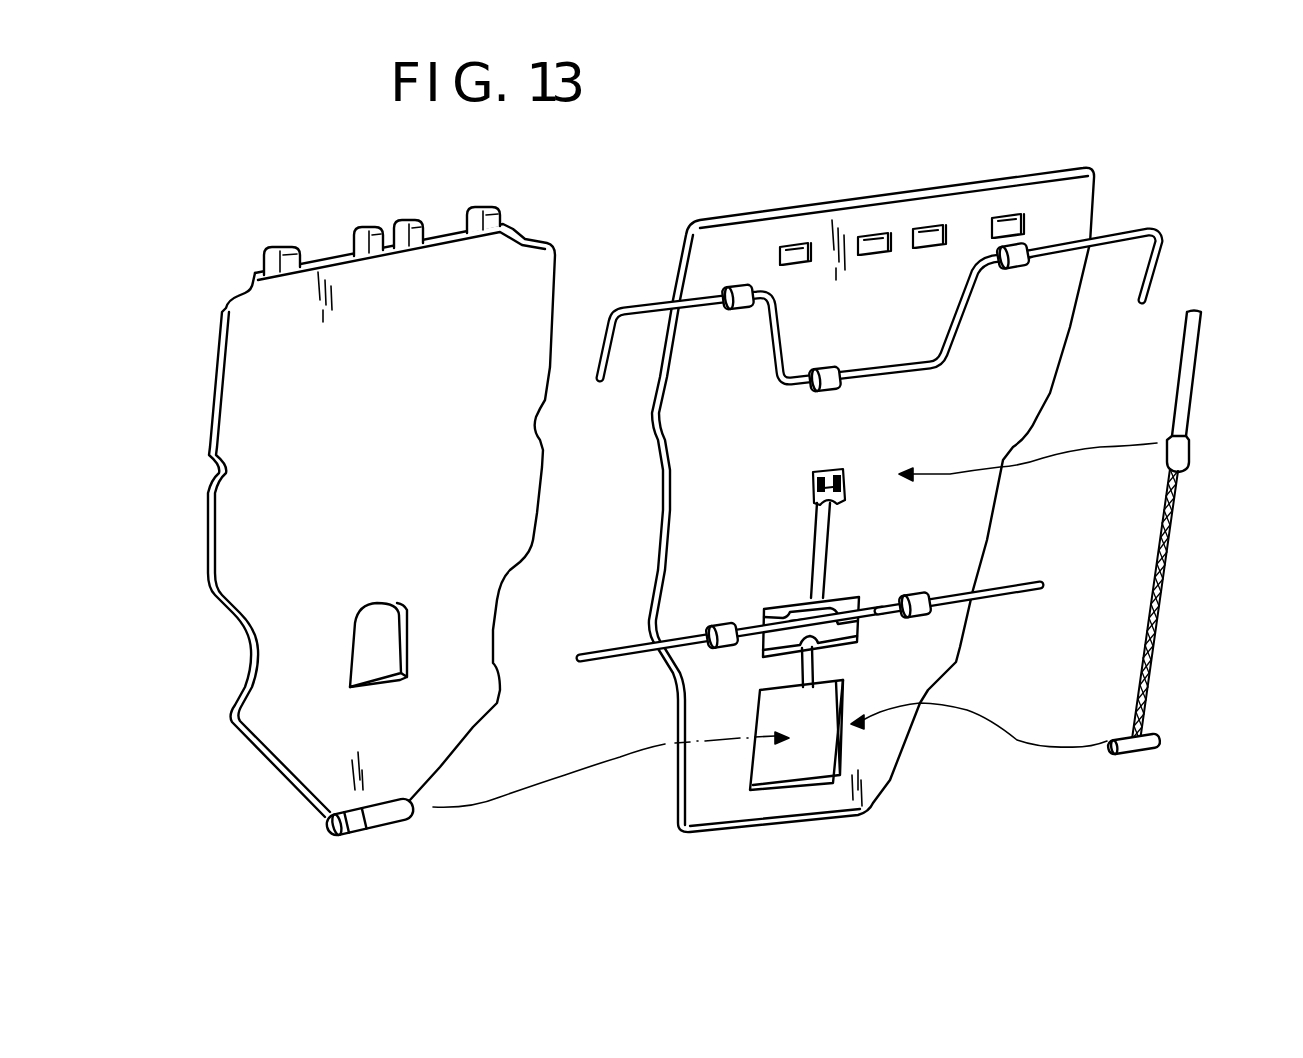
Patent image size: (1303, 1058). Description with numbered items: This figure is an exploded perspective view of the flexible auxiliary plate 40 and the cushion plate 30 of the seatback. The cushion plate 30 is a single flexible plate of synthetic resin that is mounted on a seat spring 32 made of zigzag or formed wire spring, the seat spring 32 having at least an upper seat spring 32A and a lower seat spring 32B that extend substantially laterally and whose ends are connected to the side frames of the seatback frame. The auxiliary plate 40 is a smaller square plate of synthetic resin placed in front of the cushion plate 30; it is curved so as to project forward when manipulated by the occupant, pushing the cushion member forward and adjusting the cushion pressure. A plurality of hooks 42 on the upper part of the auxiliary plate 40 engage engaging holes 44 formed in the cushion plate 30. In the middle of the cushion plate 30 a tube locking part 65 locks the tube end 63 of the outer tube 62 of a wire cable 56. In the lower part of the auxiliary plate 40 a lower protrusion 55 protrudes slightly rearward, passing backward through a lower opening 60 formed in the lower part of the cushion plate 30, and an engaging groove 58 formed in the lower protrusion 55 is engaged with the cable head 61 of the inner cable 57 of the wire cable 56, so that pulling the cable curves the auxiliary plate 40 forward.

The seat back plate 30 is at (663, 505).
The seat spring 32 is at (650, 307).
The upper seat spring 32A is at (1122, 236).
The lower seat spring 32B is at (1013, 590).
The auxiliary plate 40 is at (200, 386).
The hooks 42 is at (282, 258).
The engaging holes 44 is at (800, 256).
The lower protrusion 55 is at (402, 806).
The wire cable 56 is at (1192, 552).
The inner cable 57 is at (1152, 648).
The engaging groove 58 is at (385, 808).
The lower opening 60 is at (818, 700).
The cable head 61 is at (1153, 741).
The outer tube 62 is at (1194, 366).
The tube end 63 is at (1186, 455).
The tube locking part 65 is at (858, 495).